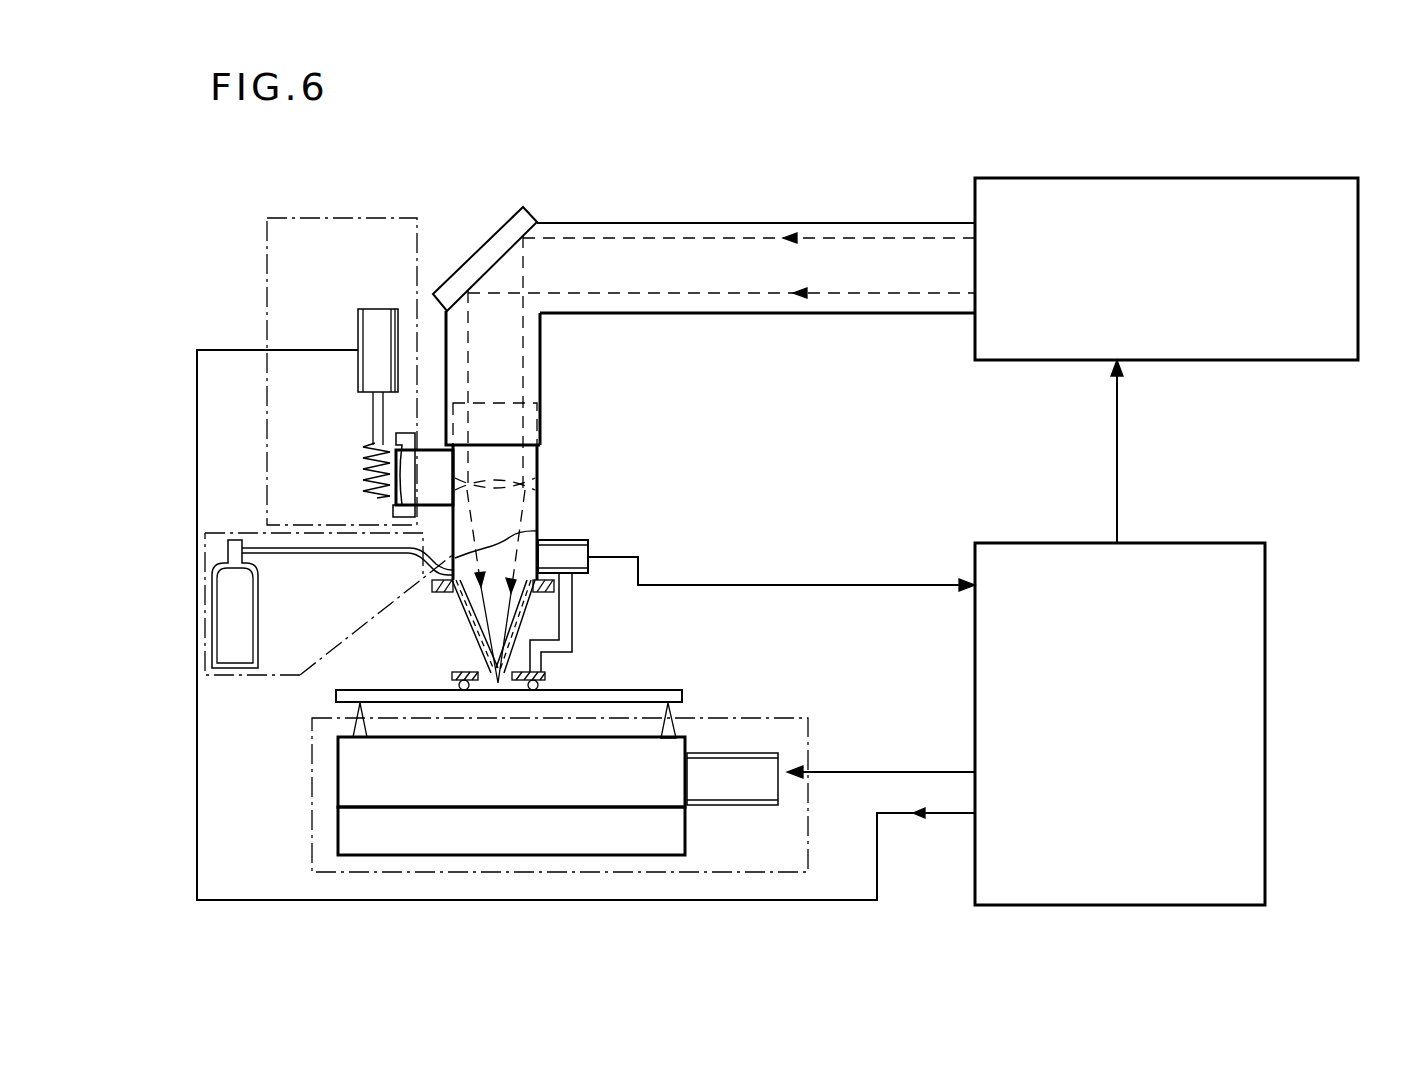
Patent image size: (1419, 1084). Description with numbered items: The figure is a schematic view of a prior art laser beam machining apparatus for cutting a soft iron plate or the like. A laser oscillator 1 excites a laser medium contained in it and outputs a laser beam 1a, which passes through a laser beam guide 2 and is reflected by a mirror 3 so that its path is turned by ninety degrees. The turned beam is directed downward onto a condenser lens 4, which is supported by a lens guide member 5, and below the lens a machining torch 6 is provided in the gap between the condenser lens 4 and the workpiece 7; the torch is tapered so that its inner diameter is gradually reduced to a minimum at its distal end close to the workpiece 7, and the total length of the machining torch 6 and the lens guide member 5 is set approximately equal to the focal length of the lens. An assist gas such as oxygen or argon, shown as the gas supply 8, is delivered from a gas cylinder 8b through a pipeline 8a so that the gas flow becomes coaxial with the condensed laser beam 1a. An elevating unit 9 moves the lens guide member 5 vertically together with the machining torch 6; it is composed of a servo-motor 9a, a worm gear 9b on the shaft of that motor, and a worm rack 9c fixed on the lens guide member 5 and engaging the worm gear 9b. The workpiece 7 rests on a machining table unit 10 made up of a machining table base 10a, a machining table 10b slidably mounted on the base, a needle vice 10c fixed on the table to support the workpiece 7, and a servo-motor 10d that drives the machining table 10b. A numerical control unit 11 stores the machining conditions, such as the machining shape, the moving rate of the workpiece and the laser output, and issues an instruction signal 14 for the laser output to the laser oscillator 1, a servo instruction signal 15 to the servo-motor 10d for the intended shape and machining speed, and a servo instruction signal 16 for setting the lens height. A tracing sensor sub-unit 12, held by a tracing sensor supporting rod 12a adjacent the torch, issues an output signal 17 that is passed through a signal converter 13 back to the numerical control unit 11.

The laser oscillator 1 is at (1240, 178).
The laser beam 1a is at (848, 238).
The laser beam guide 2 is at (757, 222).
The mirror 3 is at (527, 210).
The condenser lens 4 is at (520, 472).
The lens guide member 5 is at (540, 516).
The machining torch 6 is at (467, 622).
The workpiece 7 is at (640, 690).
The assist gas supply 8 is at (210, 533).
The pipeline 8a is at (330, 560).
The gas cylinder 8b is at (240, 638).
The elevating unit 9 is at (335, 213).
The servo-motor 9a is at (372, 308).
The worm gear 9b is at (365, 450).
The worm rack 9c is at (390, 505).
The machining table unit 10 is at (325, 718).
The machining table base 10a is at (338, 838).
The machining table 10b is at (338, 786).
The needle vice 10c is at (353, 725).
The servo-motor 10d is at (780, 760).
The numerical control unit 11 is at (1266, 677).
The tracing sensor sub-unit 12 is at (455, 674).
The tracing sensor supporting rod 12a is at (572, 626).
The signal converter 13 is at (585, 535).
The instruction signal for the laser output 14 is at (1118, 437).
The servo instruction signal 15 is at (905, 772).
The servo instruction signal for setting the lens heights 16 is at (840, 900).
The output signal 17 is at (872, 584).